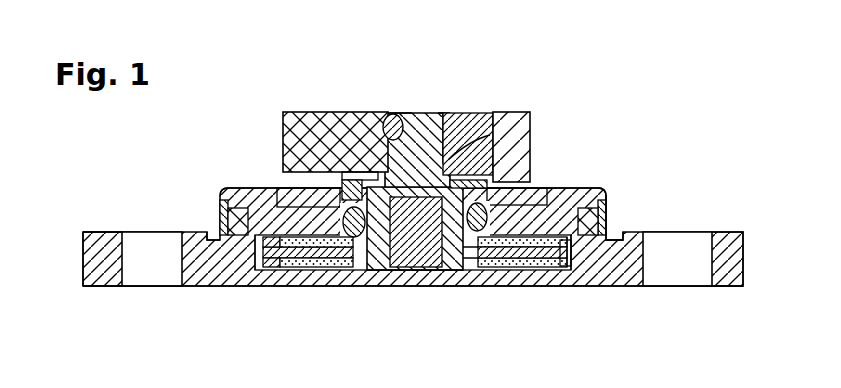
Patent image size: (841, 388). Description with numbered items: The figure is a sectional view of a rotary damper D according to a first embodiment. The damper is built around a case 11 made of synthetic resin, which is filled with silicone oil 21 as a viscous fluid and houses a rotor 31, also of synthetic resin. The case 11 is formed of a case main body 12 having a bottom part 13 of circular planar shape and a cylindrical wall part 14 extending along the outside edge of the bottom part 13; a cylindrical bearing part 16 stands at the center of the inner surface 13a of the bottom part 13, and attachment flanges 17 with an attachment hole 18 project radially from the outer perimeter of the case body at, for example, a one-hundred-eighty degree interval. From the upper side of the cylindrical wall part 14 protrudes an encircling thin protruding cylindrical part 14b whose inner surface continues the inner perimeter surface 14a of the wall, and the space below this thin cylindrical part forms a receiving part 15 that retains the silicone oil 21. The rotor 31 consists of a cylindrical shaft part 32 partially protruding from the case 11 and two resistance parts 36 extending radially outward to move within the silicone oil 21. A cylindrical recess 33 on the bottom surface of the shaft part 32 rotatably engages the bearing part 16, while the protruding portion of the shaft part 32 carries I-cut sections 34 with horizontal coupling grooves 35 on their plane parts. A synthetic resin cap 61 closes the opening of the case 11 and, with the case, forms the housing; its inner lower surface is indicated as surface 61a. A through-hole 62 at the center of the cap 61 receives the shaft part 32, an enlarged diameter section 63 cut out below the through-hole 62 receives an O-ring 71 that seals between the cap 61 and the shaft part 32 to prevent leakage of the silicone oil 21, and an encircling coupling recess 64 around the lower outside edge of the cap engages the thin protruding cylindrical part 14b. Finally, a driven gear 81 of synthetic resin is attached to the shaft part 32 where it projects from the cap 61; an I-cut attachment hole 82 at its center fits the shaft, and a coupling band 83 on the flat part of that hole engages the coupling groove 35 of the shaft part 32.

The case 11 is at (88, 224).
The case main body 12 is at (204, 292).
The bottom part 13 is at (457, 270).
The inner surface of the bottom part 13a is at (562, 268).
The cylindrical wall part 14 is at (248, 253).
The inner perimeter surface 14a is at (262, 200).
The thin protruding cylindrical part 14b is at (218, 230).
The receiving part 15 is at (300, 262).
The bearing part 16 is at (417, 272).
The attachment flange 17 is at (90, 260).
The attachment hole 18 is at (152, 272).
The silicone oil 21 is at (537, 268).
The rotor 31 is at (497, 37).
The shaft part 32 is at (420, 113).
The recess 33 is at (398, 272).
The I-cut section 34 is at (352, 182).
The coupling groove 35 is at (404, 113).
The resistance part 36 is at (320, 265).
The cap 61 is at (230, 188).
The inner surface of the cap 61a is at (572, 187).
The through-hole 62 is at (293, 113).
The enlarged diameter section 63 is at (300, 195).
The coupling recess 64 is at (228, 212).
The O-ring 71 is at (488, 205).
The driven gear 81 is at (510, 130).
The attachment hole 82 is at (385, 113).
The coupling band 83 is at (384, 133).
The rotary damper D is at (689, 224).